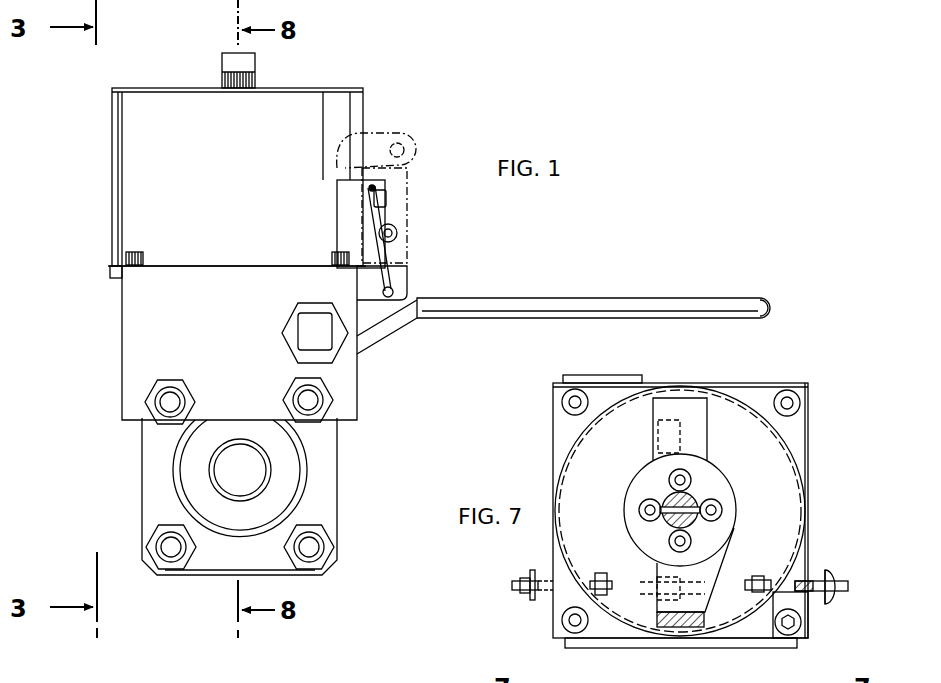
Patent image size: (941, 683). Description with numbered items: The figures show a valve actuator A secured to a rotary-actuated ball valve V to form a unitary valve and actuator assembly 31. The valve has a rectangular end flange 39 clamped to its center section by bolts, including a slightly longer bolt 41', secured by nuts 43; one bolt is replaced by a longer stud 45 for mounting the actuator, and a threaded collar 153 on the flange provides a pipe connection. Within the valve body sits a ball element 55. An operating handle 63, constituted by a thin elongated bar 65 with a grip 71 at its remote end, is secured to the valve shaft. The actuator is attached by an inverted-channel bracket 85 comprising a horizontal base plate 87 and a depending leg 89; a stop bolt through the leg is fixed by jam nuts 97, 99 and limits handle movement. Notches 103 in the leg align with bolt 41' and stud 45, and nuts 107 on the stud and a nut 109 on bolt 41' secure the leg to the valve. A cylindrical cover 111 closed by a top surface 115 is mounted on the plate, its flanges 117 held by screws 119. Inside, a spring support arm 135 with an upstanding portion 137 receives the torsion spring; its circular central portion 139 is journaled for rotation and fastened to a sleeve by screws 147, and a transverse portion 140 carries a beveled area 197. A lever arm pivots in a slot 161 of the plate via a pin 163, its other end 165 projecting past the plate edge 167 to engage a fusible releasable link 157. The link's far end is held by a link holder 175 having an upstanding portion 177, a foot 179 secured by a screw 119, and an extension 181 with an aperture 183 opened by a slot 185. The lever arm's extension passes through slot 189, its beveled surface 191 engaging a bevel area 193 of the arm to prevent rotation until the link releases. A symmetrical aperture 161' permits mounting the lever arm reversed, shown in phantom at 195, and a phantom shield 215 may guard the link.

In FIG. 1, the valve and actuator assembly 31 is at (104, 324).
In FIG. 1, the end flange 39 is at (337, 510).
In FIG. 1, the bolt 41' is at (355, 405).
In FIG. 1, the nuts 43 is at (173, 575).
In FIG. 1, the stud 45 is at (156, 422).
In FIG. 1, the ball element 55 is at (250, 474).
In FIG. 1, the operating handle 63 is at (460, 298).
In FIG. 1, the elongated bar 65 is at (398, 322).
In FIG. 1, the grip 71 is at (690, 298).
In FIG. 1, the bracket 85 is at (122, 300).
In FIG. 1, the base plate 87 is at (112, 272).
In FIG. 7, the base plate 87 is at (746, 383).
In FIG. 1, the leg 89 is at (145, 345).
In FIG. 1, the jam nut 97 is at (318, 336).
In FIG. 1, the jam nut 99 is at (296, 310).
In FIG. 1, the notches 103 is at (158, 402).
In FIG. 1, the nuts 107 is at (182, 380).
In FIG. 1, the nut 109 is at (330, 390).
In FIG. 1, the cover 111 is at (112, 184).
In FIG. 7, the cover 111 is at (800, 455).
In FIG. 1, the top surface 115 is at (320, 82).
In FIG. 7, the flanges 117 is at (562, 424).
In FIG. 1, the screws 119 is at (136, 254).
In FIG. 7, the screws 119 is at (563, 400).
In FIG. 7, the spring support arm 135 is at (732, 550).
In FIG. 7, the upstanding portion 137 is at (706, 648).
In FIG. 7, the central portion 139 is at (735, 522).
In FIG. 7, the transverse portion 140 is at (678, 398).
In FIG. 7, the screws 147 is at (640, 506).
In FIG. 1, the collar 153 is at (228, 60).
In FIG. 1, the releasable link 157 is at (386, 252).
In FIG. 7, the slot 161 is at (603, 566).
In FIG. 7, the aperture 161' is at (753, 570).
In FIG. 7, the pin 163 is at (590, 584).
In FIG. 1, the end 165 is at (396, 274).
In FIG. 7, the end 165 is at (850, 586).
In FIG. 7, the edge 167 is at (806, 576).
In FIG. 1, the link holder 175 is at (378, 132).
In FIG. 1, the upstanding portion 177 is at (345, 199).
In FIG. 7, the upstanding portion 177 is at (832, 580).
In FIG. 1, the foot 179 is at (335, 256).
In FIG. 7, the foot 179 is at (802, 606).
In FIG. 1, the extension 181 is at (385, 186).
In FIG. 1, the aperture 183 is at (376, 187).
In FIG. 1, the slot 185 is at (388, 203).
In FIG. 7, the slot 189 is at (712, 603).
In FIG. 7, the beveled surface 191 is at (646, 590).
In FIG. 7, the bevel area 193 is at (660, 596).
In FIG. 7, the lever arm in reversed position 195 is at (533, 600).
In FIG. 7, the beveled area 197 is at (660, 440).
In FIG. 1, the shield 215 is at (405, 220).
In FIG. 1, the valve actuator A is at (110, 113).
In FIG. 7, the valve actuator A is at (552, 450).
In FIG. 1, the valve V is at (140, 478).